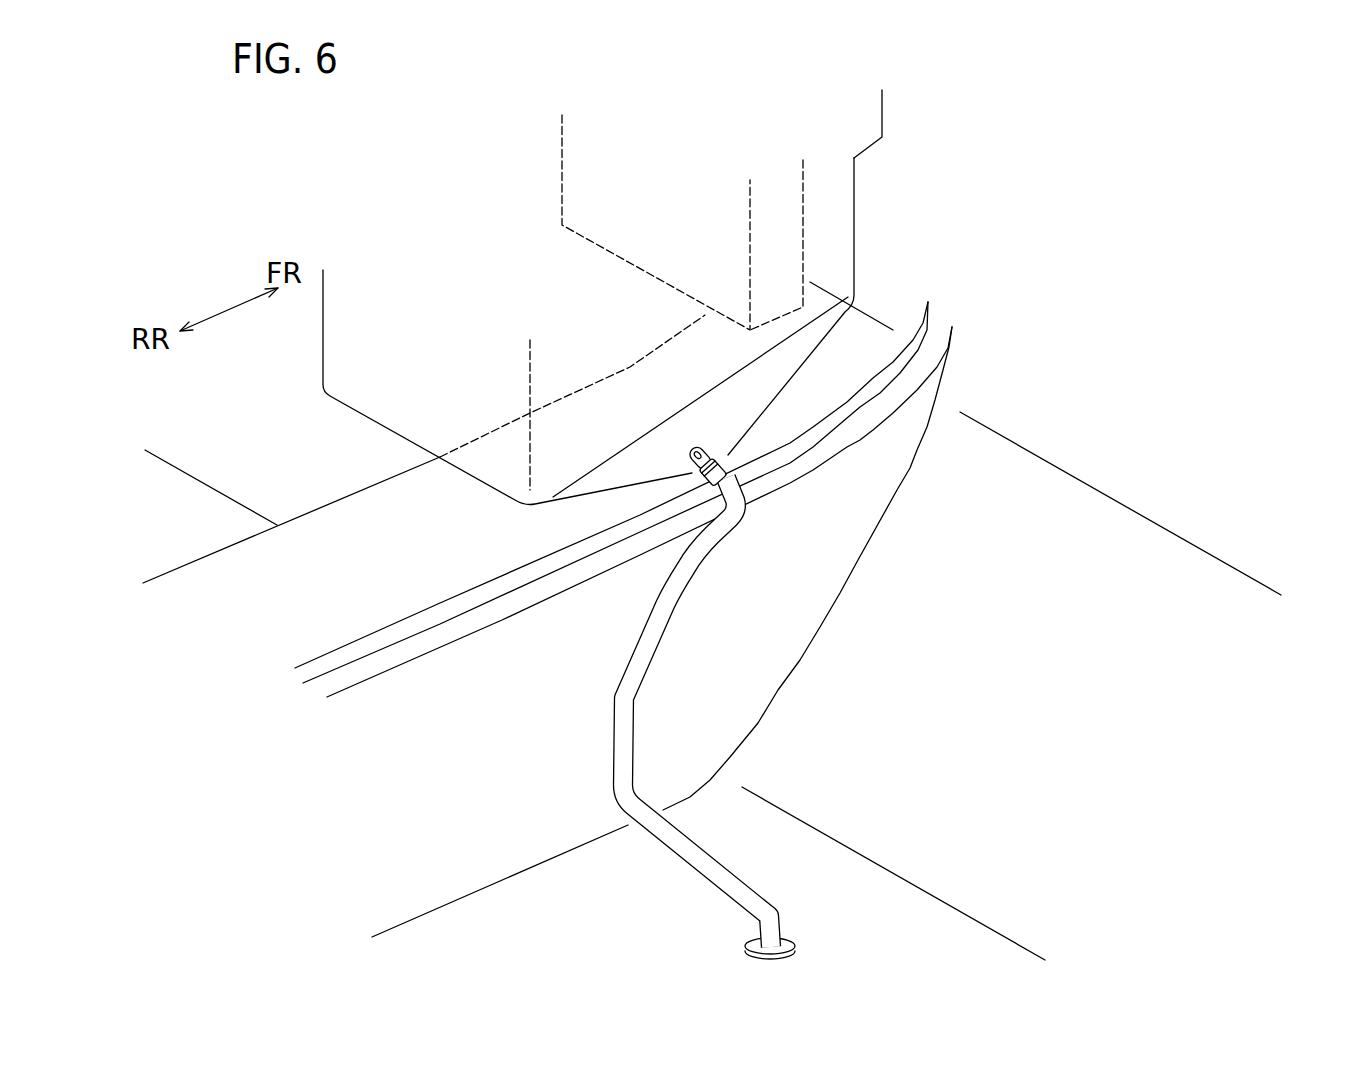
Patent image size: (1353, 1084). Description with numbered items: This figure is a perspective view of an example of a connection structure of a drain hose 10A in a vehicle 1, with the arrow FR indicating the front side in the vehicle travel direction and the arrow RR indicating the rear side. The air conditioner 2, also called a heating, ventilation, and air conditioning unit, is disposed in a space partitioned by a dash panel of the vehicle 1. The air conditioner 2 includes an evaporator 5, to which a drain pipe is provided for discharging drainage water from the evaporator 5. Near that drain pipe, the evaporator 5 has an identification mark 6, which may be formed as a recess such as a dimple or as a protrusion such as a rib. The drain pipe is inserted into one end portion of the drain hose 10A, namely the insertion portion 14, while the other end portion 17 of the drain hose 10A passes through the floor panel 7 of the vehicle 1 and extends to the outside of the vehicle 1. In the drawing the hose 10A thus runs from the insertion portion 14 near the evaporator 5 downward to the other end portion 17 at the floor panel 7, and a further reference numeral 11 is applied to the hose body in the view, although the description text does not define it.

The vehicle 1 is at (1027, 235).
The air conditioner 2 is at (862, 182).
The evaporator 5 is at (847, 230).
The identification mark 6 is at (703, 447).
The floor panel 7 is at (507, 900).
The drain hose 10A is at (644, 712).
The pipe body 11 is at (664, 630).
The insertion portion 14 is at (722, 462).
The other end portion 17 is at (767, 932).